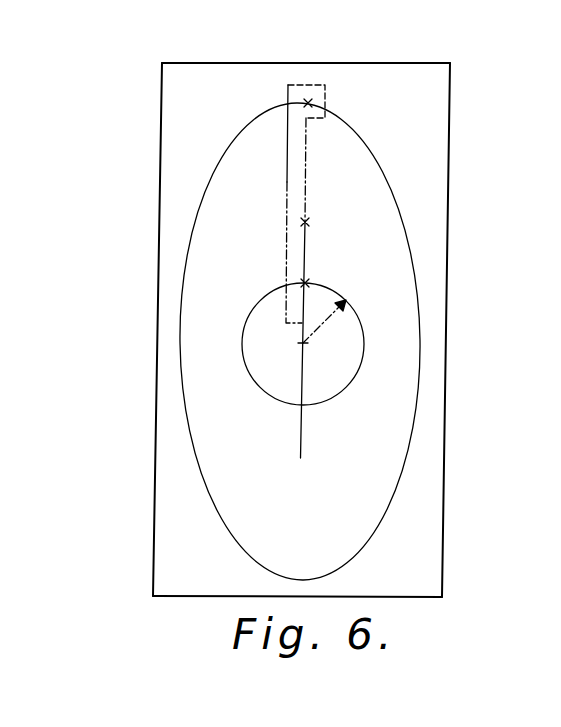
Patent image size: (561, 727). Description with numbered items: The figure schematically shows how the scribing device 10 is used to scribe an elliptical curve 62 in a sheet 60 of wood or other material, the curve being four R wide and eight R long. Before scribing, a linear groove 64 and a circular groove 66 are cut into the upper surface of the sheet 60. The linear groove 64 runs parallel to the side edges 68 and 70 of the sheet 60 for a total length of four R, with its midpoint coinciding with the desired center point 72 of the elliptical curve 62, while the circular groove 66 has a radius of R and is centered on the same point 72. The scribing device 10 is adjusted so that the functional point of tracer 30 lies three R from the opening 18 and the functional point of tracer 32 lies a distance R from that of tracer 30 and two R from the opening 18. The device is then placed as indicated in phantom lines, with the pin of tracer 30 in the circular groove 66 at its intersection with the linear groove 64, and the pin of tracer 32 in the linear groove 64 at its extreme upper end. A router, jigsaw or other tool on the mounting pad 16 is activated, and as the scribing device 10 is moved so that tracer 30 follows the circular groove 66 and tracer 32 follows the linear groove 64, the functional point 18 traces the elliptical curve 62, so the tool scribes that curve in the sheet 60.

The scribing device 10 is at (288, 180).
The mounting pad 16 is at (326, 96).
The opening 18 is at (307, 102).
The tracer 30 is at (305, 283).
The tracer 32 is at (305, 222).
The sheet 60 is at (402, 85).
The elliptical curve 62 is at (391, 170).
The linear groove 64 is at (303, 308).
The circular groove 66 is at (363, 356).
The side edge 68 is at (158, 203).
The side edge 70 is at (447, 240).
The center point 72 is at (306, 346).